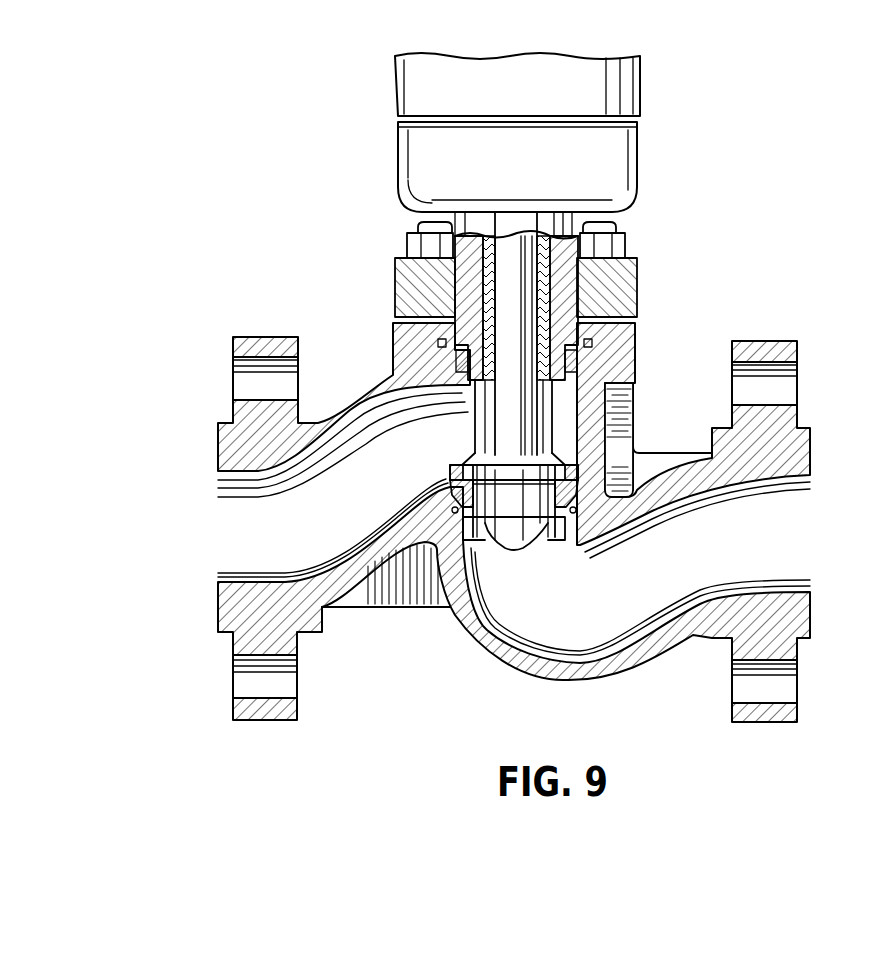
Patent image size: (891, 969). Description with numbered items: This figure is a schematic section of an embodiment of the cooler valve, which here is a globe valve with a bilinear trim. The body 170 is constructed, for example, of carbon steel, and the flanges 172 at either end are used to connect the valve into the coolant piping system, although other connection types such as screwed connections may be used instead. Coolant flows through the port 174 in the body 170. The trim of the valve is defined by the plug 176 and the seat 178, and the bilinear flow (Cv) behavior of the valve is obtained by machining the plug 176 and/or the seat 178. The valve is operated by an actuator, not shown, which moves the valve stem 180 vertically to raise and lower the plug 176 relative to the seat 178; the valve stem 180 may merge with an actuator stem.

The body 170 is at (497, 655).
The flanges 172 is at (262, 340).
The port 174 is at (225, 526).
The plug 176 is at (512, 530).
The seat 178 is at (456, 492).
The valve stem 180 is at (523, 405).